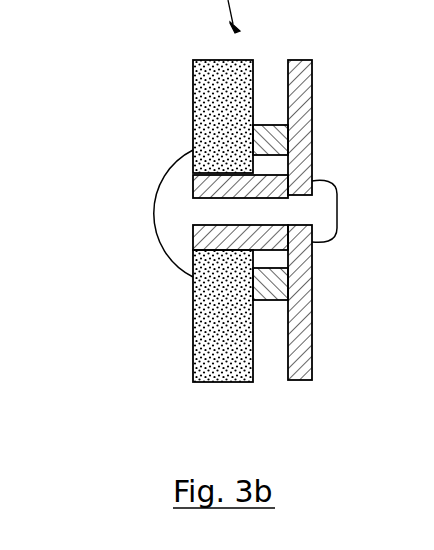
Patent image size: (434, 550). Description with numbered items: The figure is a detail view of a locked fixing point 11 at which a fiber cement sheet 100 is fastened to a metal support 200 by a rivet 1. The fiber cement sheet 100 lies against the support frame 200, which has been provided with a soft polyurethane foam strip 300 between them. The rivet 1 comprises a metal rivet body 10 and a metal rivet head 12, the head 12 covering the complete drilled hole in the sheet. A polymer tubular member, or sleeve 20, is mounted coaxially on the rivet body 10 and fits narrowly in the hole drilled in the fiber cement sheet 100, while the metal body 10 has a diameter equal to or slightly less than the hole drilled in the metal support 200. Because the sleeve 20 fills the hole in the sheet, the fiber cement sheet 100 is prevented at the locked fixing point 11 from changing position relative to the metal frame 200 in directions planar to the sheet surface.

The rivet 1 is at (138, 225).
The metal rivet body 10 is at (188, 296).
The locked fixing point 11 is at (133, 128).
The metal rivet head 12 is at (174, 161).
The polymer tubular member 20 is at (348, 302).
The fiber cement sheet 100 is at (193, 90).
The metal support 200 is at (339, 100).
The soft polyurethane foam strip 300 is at (319, 358).